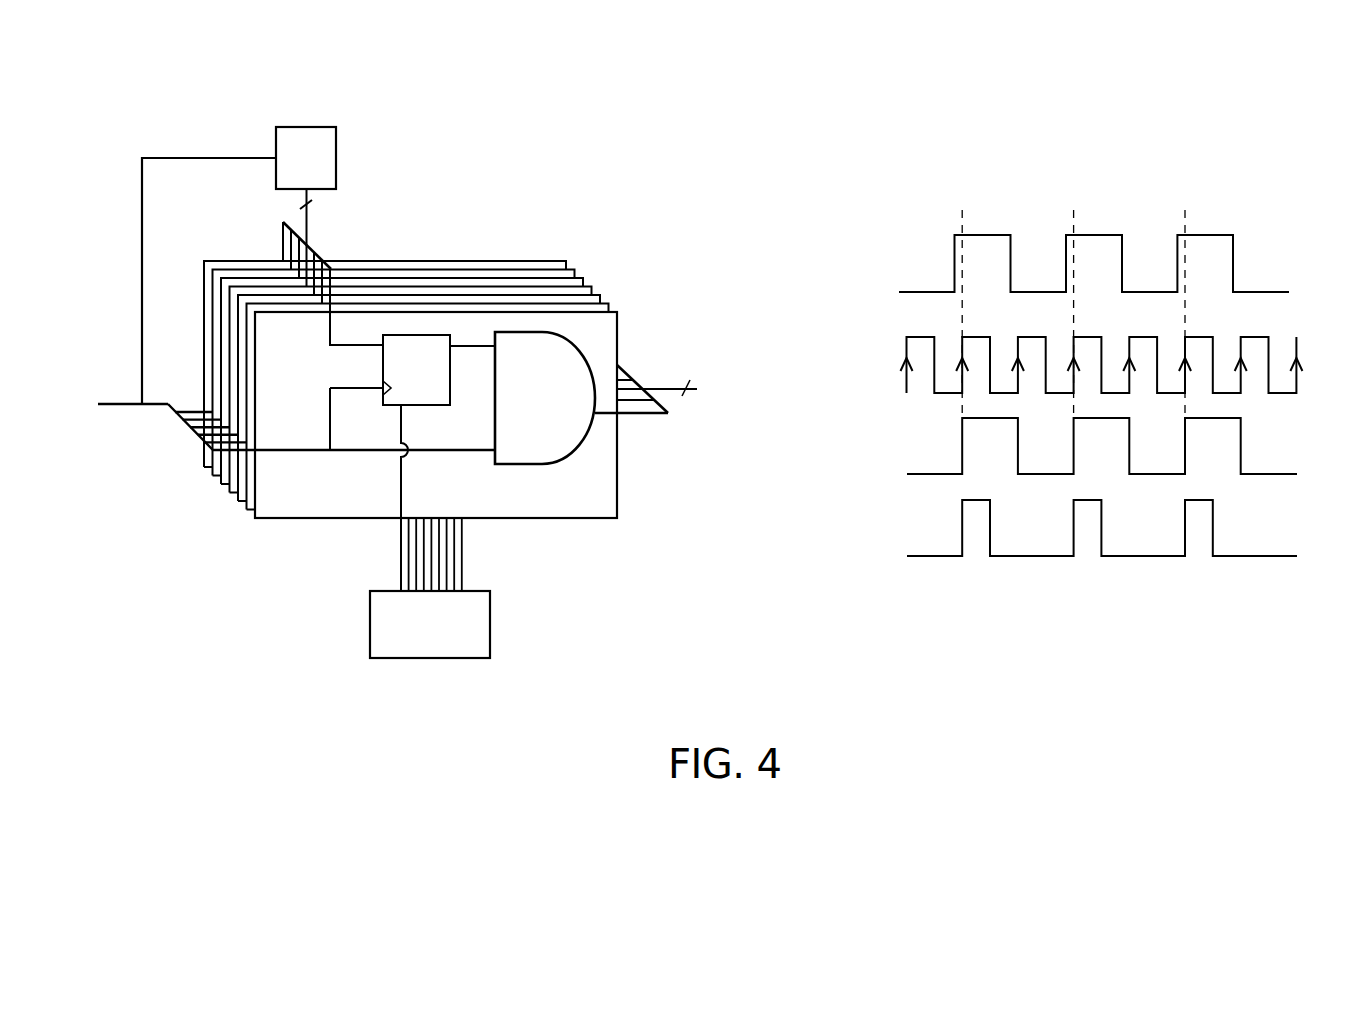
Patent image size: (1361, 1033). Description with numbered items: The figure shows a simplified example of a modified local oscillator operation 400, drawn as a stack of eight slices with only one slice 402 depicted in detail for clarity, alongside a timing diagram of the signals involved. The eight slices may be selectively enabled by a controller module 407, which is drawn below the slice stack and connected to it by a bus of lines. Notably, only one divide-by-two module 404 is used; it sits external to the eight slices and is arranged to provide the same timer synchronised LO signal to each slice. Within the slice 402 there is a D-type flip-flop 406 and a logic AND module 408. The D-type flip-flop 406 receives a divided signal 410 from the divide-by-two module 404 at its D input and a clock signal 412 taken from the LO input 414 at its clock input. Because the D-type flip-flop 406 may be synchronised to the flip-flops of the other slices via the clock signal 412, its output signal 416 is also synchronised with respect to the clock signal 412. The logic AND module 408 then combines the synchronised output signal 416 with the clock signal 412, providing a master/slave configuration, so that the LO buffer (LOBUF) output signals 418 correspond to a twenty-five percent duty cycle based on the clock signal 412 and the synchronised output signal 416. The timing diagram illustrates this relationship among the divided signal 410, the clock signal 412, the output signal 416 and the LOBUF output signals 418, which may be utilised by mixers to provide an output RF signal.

The modified local oscillator operation 400 is at (698, 392).
The slice 402 is at (528, 520).
The divide-by-2 module 404 is at (337, 140).
The D-type flip-flop 406 is at (417, 335).
The controller module 407 is at (370, 620).
The logic AND module 408 is at (575, 452).
The DIV2 signal 410 is at (332, 271).
The clock signal 412 is at (215, 452).
The LO input 414 is at (125, 407).
The output signal 416 is at (478, 346).
The LO buffer (LOBUF) output signals 418 is at (647, 417).